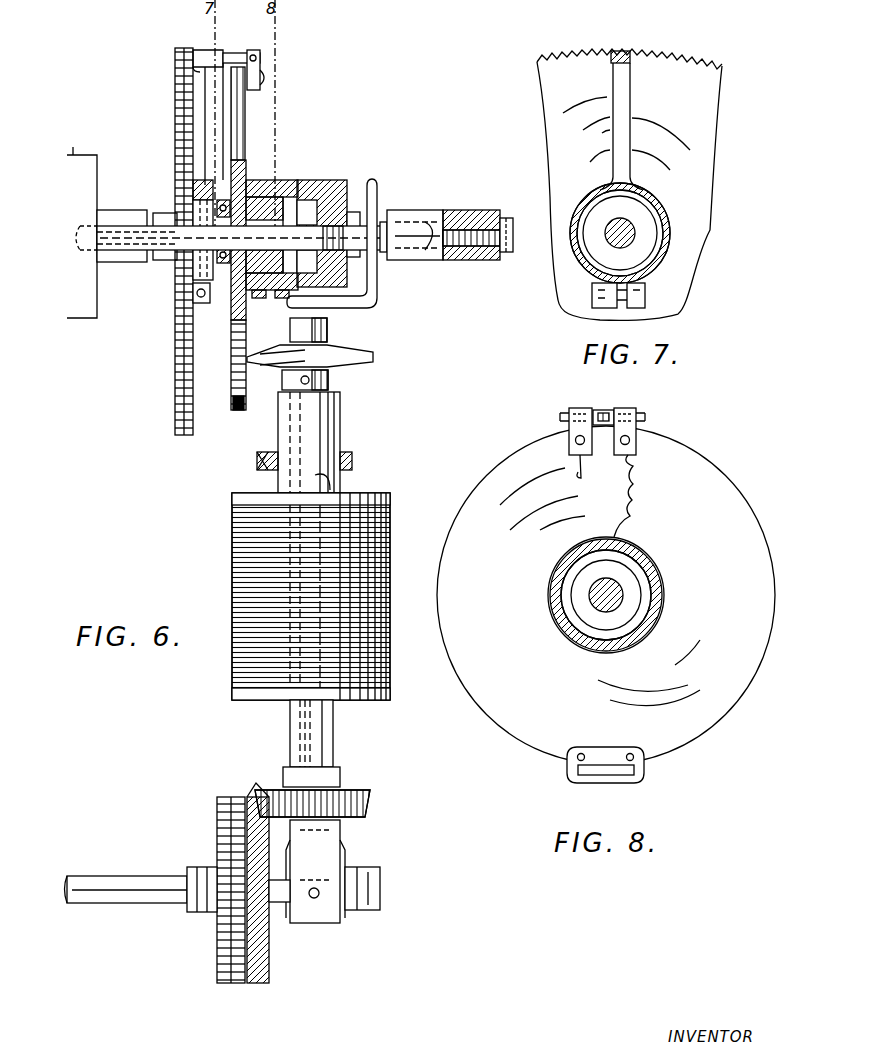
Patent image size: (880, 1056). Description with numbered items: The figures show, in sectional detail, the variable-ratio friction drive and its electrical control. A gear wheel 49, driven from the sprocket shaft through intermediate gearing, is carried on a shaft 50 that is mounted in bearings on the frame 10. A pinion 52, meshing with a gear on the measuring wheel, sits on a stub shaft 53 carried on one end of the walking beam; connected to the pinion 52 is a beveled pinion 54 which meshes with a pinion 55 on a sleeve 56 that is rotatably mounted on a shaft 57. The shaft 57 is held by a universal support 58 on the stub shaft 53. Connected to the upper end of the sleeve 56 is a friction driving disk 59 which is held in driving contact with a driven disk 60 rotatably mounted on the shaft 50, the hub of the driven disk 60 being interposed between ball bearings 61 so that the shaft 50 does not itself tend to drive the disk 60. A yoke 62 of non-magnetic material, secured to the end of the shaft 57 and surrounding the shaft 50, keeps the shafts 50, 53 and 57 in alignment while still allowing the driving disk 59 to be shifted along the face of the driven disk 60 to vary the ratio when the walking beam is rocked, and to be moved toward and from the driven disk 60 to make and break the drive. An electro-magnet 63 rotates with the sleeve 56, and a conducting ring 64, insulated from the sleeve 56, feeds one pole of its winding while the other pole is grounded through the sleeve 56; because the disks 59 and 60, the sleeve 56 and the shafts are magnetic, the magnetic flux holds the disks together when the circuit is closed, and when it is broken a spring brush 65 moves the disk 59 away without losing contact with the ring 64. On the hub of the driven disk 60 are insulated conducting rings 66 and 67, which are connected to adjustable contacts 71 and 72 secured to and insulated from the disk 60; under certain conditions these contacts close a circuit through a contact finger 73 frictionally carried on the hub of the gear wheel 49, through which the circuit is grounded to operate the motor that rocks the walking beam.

In FIG. 6, the frame 10 is at (73, 153).
In FIG. 6, the gear wheel 49 is at (176, 398).
In FIG. 7, the gear wheel 49 is at (710, 116).
In FIG. 7, the shaft 50 is at (637, 232).
In FIG. 8, the shaft 50 is at (622, 600).
In FIG. 6, the pinion 52 is at (218, 812).
In FIG. 6, the stub shaft 53 is at (142, 868).
In FIG. 6, the beveled pinion 54 is at (262, 975).
In FIG. 6, the pinion 55 is at (366, 806).
In FIG. 6, the sleeve 56 is at (335, 745).
In FIG. 6, the shaft 57 is at (305, 731).
In FIG. 6, the universal support 58 is at (325, 183).
In FIG. 6, the friction driving disk 59 is at (365, 355).
In FIG. 6, the driven disk 60 is at (240, 410).
In FIG. 8, the driven disk 60 is at (724, 476).
In FIG. 6, the ball bearings 61 is at (250, 176).
In FIG. 6, the yoke 62 is at (378, 300).
In FIG. 6, the electro-magnet 63 is at (232, 570).
In FIG. 6, the conducting ring 64 is at (352, 468).
In FIG. 6, the spring brush 65 is at (257, 463).
In FIG. 6, the conducting ring 66 is at (262, 300).
In FIG. 8, the conducting ring 66 is at (643, 550).
In FIG. 6, the conducting ring 67 is at (285, 300).
In FIG. 6, the adjustable contact 71 is at (254, 48).
In FIG. 8, the adjustable contact 71 is at (640, 414).
In FIG. 8, the adjustable contact 72 is at (560, 416).
In FIG. 6, the contact finger 73 is at (193, 128).
In FIG. 7, the contact finger 73 is at (622, 103).
In FIG. 8, the contact finger 73 is at (606, 410).